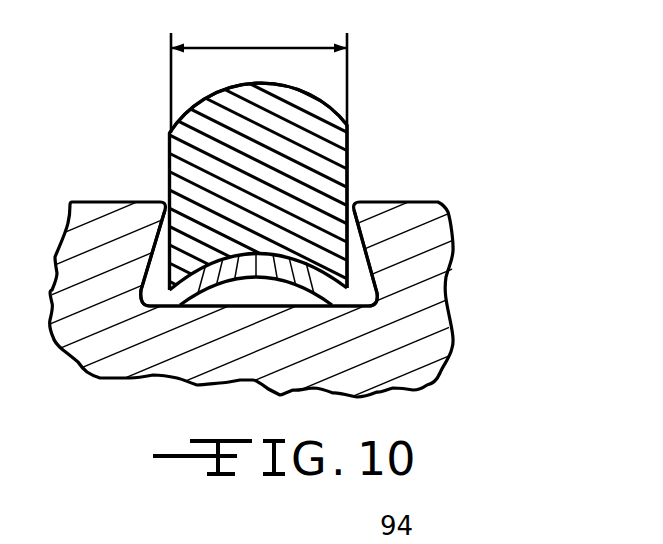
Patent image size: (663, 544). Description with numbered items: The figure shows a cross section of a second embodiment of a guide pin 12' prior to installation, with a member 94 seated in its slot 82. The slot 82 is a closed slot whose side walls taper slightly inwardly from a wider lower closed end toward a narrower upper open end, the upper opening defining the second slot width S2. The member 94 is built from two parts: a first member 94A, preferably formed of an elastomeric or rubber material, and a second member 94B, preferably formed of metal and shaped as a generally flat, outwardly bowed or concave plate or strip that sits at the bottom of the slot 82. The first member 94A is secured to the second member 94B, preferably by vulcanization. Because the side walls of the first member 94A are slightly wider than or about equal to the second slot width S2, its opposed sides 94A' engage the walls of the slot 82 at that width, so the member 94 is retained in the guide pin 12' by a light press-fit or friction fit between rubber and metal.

The guide pin 12' is at (281, 289).
The slot 82 is at (258, 296).
The member 94 is at (347, 118).
The first member 94A is at (215, 107).
The opposed sides of the first member 94A' is at (263, 207).
The second member 94B is at (180, 300).
The second slot width S2 is at (250, 44).